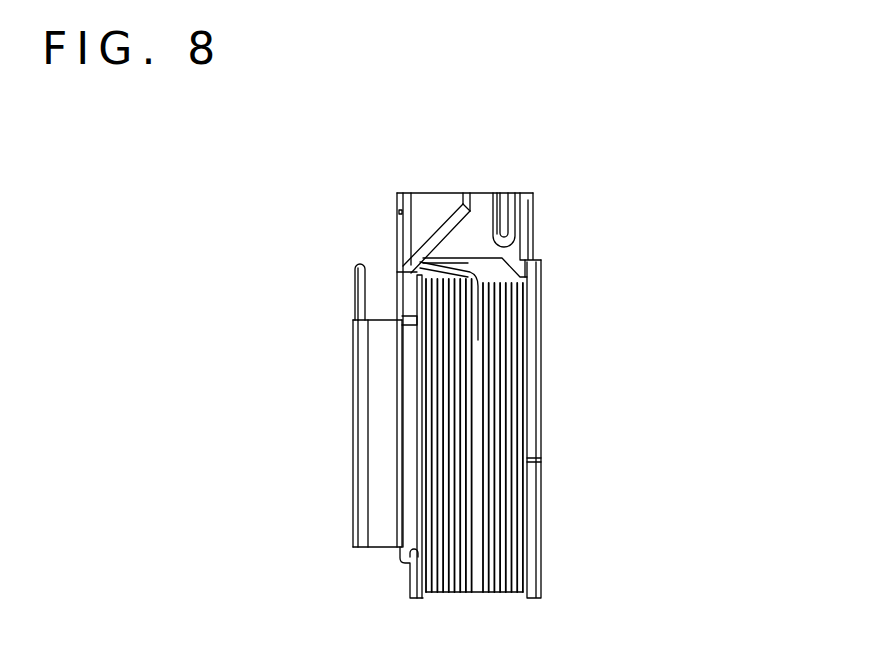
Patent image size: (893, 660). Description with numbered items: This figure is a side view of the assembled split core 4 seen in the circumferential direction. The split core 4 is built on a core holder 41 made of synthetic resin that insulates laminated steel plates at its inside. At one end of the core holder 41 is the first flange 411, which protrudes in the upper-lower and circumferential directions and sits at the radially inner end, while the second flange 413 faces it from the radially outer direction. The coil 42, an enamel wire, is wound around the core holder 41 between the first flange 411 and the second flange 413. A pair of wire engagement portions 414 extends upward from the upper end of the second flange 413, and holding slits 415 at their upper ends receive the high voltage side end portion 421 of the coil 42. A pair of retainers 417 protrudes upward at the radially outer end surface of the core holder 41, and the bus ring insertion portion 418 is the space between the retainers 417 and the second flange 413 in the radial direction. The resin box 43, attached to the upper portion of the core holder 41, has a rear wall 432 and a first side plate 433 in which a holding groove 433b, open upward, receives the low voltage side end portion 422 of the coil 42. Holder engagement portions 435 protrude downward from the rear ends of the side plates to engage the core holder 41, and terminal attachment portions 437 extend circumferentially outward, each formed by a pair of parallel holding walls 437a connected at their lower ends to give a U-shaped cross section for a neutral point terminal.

The split core 4 is at (743, 183).
The core holder 41 is at (365, 512).
The first flange 411 is at (533, 442).
The second flange 413 is at (413, 580).
The wire engagement portions 414 is at (399, 220).
The holding slits 415 is at (400, 197).
The retainers 417 is at (354, 275).
The bus ring insertion portion 418 is at (387, 274).
The coil 42 is at (514, 530).
The high voltage side end portion 421 is at (397, 214).
The low voltage side end portion 422 is at (410, 238).
The resin box 43 is at (525, 247).
The rear wall 432 is at (535, 227).
The first side plate 433 is at (523, 200).
The holding groove 433b is at (463, 197).
The holder engagement portions 435 is at (537, 273).
The terminal attachment portions 437 is at (517, 220).
The holding walls 437a is at (493, 193).